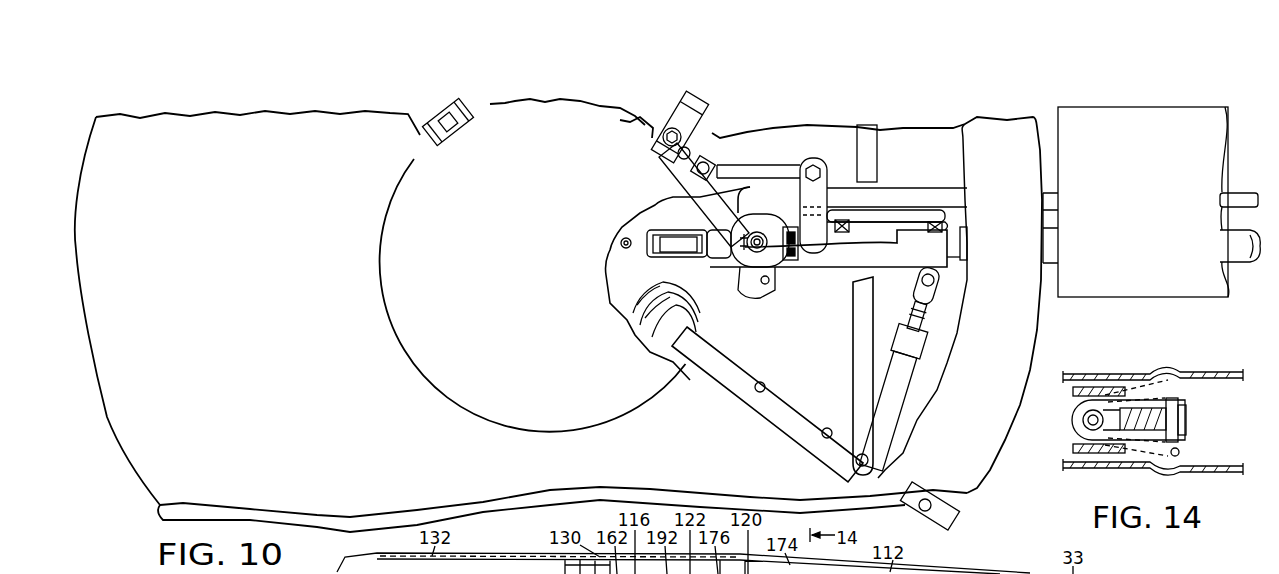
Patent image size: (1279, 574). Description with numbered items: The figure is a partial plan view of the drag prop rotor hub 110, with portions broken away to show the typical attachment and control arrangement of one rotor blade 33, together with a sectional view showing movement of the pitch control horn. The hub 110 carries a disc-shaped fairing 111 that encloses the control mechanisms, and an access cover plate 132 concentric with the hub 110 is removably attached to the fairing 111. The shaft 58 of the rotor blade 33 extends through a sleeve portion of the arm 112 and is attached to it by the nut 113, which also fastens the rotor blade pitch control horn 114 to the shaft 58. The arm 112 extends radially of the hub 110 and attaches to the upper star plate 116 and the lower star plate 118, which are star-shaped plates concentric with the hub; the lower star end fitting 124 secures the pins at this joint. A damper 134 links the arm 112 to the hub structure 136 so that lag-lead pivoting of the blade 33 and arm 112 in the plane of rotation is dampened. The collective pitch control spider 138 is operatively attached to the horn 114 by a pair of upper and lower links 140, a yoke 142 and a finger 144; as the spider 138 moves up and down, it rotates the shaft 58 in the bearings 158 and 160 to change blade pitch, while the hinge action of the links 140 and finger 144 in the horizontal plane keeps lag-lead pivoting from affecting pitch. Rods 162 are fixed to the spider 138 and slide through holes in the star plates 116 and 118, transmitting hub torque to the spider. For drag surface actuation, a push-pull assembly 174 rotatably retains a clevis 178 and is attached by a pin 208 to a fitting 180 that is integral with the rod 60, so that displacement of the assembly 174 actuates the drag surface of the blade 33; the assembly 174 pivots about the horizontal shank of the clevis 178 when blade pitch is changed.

In FIG. 10, the rotor hub 110 is at (120, 478).
In FIG. 10, the fairing 111 is at (110, 430).
In FIG. 14, the fairing 111 is at (1196, 372).
In FIG. 10, the access cover plate 132 is at (383, 182).
In FIG. 10, the links 140 is at (704, 136).
In FIG. 10, the rotor blade collective pitch control spider 138 is at (653, 151).
In FIG. 10, the yoke 142 is at (709, 162).
In FIG. 10, the lower star plate 118 is at (670, 182).
In FIG. 10, the upper star plate 116 is at (640, 218).
In FIG. 10, the rods 162 is at (620, 246).
In FIG. 10, the clevis 178 is at (700, 257).
In FIG. 10, the pin 208 is at (748, 237).
In FIG. 10, the fitting 180 is at (758, 234).
In FIG. 10, the finger 144 is at (770, 167).
In FIG. 14, the finger 144 is at (1193, 424).
In FIG. 10, the rotor blade pitch control horn 114 is at (821, 158).
In FIG. 14, the rotor blade pitch control horn 114 is at (1083, 425).
In FIG. 10, the rod 60 is at (882, 200).
In FIG. 14, the rod 60 is at (1138, 405).
In FIG. 10, the shaft 58 is at (888, 222).
In FIG. 14, the shaft 58 is at (1090, 402).
In FIG. 10, the bearing 158 is at (841, 220).
In FIG. 10, the bearing 160 is at (933, 222).
In FIG. 10, the arm 112 is at (847, 260).
In FIG. 14, the arm 112 is at (1096, 452).
In FIG. 10, the nut 113 is at (792, 263).
In FIG. 10, the lower star end fitting 124 is at (762, 285).
In FIG. 10, the push-pull assembly 174 is at (705, 305).
In FIG. 10, the hub structure 136 is at (807, 415).
In FIG. 10, the damper 134 is at (900, 374).
In FIG. 10, the rotor blade 33 is at (1165, 276).